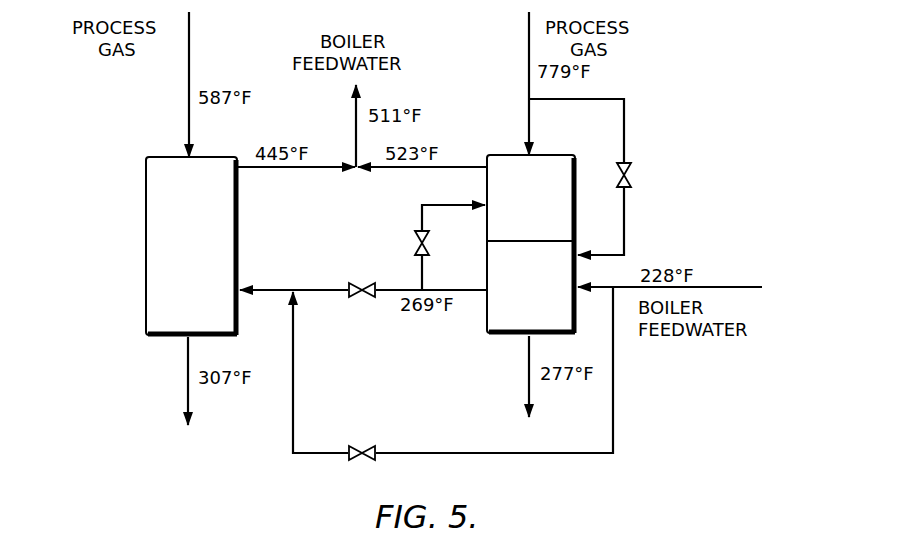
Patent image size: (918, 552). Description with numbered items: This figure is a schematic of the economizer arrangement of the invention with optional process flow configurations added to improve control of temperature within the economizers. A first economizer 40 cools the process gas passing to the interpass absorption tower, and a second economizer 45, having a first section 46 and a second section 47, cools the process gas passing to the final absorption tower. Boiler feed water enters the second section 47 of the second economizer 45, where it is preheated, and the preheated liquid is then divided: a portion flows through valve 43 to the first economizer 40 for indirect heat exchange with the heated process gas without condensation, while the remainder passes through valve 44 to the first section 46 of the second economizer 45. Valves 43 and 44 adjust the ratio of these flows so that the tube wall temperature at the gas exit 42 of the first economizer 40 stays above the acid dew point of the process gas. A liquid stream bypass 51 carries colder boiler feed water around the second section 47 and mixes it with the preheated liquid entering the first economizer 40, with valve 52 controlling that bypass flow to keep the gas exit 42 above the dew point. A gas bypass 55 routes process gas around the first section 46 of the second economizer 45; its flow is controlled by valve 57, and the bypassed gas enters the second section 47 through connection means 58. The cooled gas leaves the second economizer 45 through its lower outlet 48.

The first economizer 40 is at (143, 240).
The gas exit 42 is at (186, 340).
The valve 43 is at (362, 298).
The valve 44 is at (415, 240).
The second economizer 45 is at (487, 316).
The first section 46 is at (546, 172).
The second section 47 is at (507, 281).
The process gas outlet line 48 is at (528, 338).
The liquid stream bypass 51 is at (418, 452).
The valve 52 is at (361, 446).
The gas bypass 55 is at (625, 117).
The valve 57 is at (630, 177).
The connection means 58 is at (580, 266).